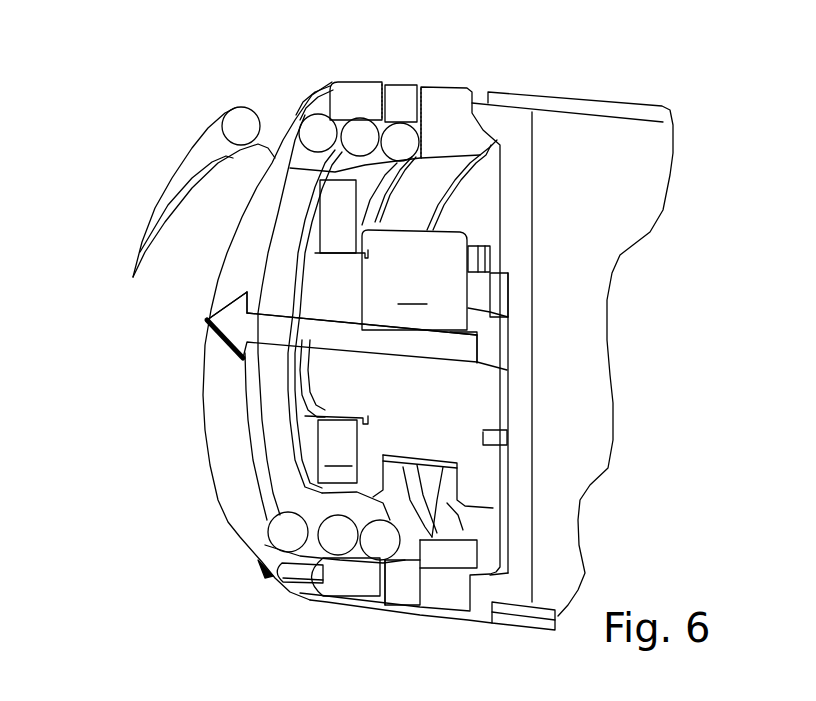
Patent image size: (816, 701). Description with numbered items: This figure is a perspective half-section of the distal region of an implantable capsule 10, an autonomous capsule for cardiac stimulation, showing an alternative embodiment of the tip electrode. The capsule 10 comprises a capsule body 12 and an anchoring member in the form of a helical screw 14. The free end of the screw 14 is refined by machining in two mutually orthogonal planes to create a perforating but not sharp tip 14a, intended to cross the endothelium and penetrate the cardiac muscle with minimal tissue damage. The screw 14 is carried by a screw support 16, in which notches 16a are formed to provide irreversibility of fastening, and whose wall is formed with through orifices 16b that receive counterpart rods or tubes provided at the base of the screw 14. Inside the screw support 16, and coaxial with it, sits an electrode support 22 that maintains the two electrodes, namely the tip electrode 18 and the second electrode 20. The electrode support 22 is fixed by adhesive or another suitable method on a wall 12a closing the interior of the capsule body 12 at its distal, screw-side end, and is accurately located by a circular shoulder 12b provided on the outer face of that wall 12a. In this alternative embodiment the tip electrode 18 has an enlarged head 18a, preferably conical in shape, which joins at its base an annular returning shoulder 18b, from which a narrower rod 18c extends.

The implantable capsule 10 is at (376, 342).
The capsule body 12 is at (511, 324).
The wall 12a is at (499, 584).
The circular shoulder 12b is at (624, 357).
The helical screw 14 is at (154, 143).
The tip 14a is at (152, 192).
The screw support 16 is at (281, 619).
The notches 16a is at (217, 577).
The through orifices 16b is at (350, 619).
The tip electrode 18 is at (300, 331).
The enlarged head 18a is at (170, 311).
The annular returning shoulder 18b is at (197, 284).
The rod 18c is at (362, 360).
The electrode 20 is at (379, 355).
The electrode support 22 is at (355, 346).